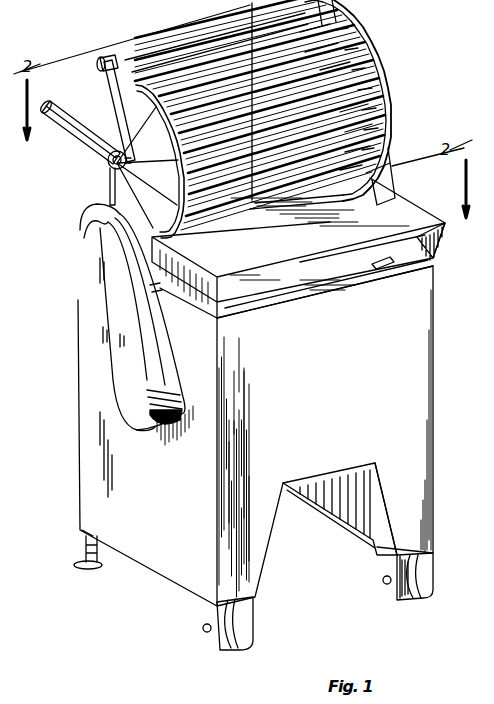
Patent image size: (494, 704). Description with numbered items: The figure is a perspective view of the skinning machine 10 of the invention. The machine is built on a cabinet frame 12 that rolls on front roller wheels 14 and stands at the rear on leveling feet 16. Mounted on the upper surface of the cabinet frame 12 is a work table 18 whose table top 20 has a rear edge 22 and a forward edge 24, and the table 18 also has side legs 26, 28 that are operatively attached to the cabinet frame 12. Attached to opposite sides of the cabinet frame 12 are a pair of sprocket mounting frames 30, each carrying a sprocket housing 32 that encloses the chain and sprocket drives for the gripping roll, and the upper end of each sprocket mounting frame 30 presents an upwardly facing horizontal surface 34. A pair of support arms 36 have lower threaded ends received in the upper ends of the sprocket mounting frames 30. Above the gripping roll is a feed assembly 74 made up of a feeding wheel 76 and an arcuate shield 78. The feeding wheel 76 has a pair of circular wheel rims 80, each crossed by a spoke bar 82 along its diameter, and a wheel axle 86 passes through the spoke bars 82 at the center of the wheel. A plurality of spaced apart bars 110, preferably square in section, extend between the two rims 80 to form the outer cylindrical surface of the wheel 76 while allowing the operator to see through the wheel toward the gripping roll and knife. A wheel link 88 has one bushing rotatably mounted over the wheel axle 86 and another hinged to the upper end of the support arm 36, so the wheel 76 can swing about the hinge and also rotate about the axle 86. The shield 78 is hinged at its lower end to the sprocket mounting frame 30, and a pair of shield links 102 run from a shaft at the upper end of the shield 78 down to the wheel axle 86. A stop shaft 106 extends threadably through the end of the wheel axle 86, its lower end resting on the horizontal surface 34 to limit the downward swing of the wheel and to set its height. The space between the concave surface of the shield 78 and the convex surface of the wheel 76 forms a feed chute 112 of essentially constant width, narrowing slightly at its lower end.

The skinning machine 10 is at (378, 32).
The cabinet frame 12 is at (437, 360).
The front roller wheels 14 is at (400, 590).
The rear leveling feet 16 is at (85, 570).
The work table 18 is at (420, 276).
The table top 20 is at (433, 260).
The rear edge 22 is at (433, 280).
The forward edge 24 is at (392, 185).
The side leg 26 is at (140, 300).
The side leg 28 is at (440, 246).
The sprocket mounting frame 30 is at (125, 250).
The sprocket housing 32 is at (125, 317).
The horizontal surface 34 is at (135, 195).
The support arm 36 is at (140, 175).
The feed assembly 74 is at (75, 70).
The feeding wheel 76 is at (382, 52).
The arcuate shield 78 is at (154, 34).
The wheel rims 80 is at (135, 235).
The spoke bar 82 is at (130, 220).
The wheel axle 86 is at (100, 159).
The wheel link 88 is at (80, 105).
The shield links 102 is at (165, 55).
The stop shaft 106 is at (108, 168).
The spaced apart bars 110 is at (366, 63).
The feed chute 112 is at (136, 50).